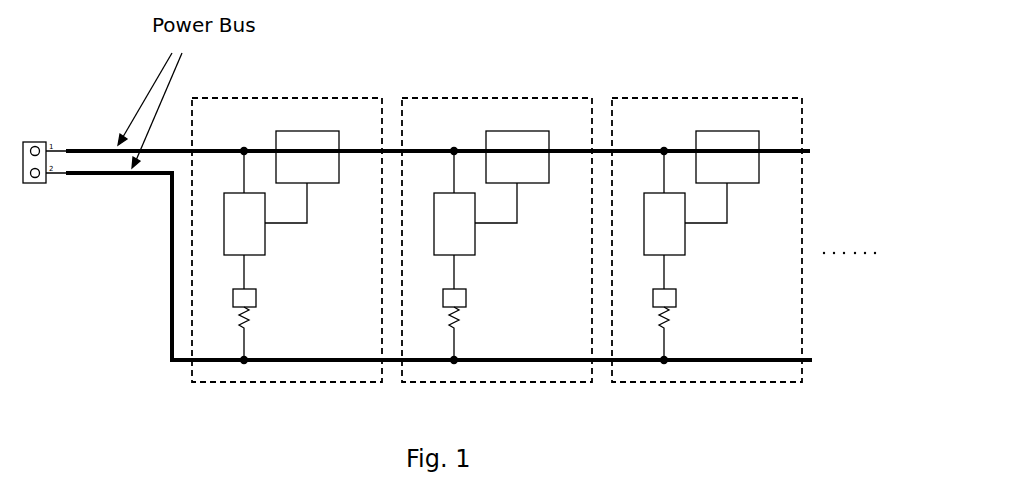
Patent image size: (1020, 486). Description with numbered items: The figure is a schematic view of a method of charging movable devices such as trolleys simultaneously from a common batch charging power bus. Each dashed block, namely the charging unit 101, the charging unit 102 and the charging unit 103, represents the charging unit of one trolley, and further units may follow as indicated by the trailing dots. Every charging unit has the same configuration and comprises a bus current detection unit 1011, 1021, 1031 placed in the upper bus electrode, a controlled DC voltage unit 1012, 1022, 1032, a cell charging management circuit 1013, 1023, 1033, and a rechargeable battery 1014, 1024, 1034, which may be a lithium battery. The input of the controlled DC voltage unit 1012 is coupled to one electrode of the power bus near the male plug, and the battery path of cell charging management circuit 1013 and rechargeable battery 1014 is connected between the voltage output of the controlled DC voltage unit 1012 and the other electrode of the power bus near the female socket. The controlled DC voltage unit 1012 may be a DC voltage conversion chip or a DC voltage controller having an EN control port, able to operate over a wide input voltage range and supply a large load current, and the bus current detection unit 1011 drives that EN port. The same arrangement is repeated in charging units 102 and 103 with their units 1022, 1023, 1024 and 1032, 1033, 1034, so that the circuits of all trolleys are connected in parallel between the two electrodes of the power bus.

The charging unit 101 is at (270, 382).
The bus current detection unit 1011 is at (305, 127).
The controlled DC voltage unit 1012 is at (266, 238).
The cell charging management circuit 1013 is at (257, 297).
The rechargeable battery 1014 is at (248, 328).
The charging unit 102 is at (480, 382).
The bus current detection unit 1021 is at (515, 127).
The controlled DC voltage unit 1022 is at (476, 238).
The cell charging management circuit 1023 is at (467, 297).
The rechargeable battery 1024 is at (458, 328).
The charging unit 103 is at (690, 382).
The bus current detection unit 1031 is at (725, 127).
The controlled DC voltage unit 1032 is at (686, 238).
The cell charging management circuit 1033 is at (677, 297).
The rechargeable battery 1034 is at (668, 328).